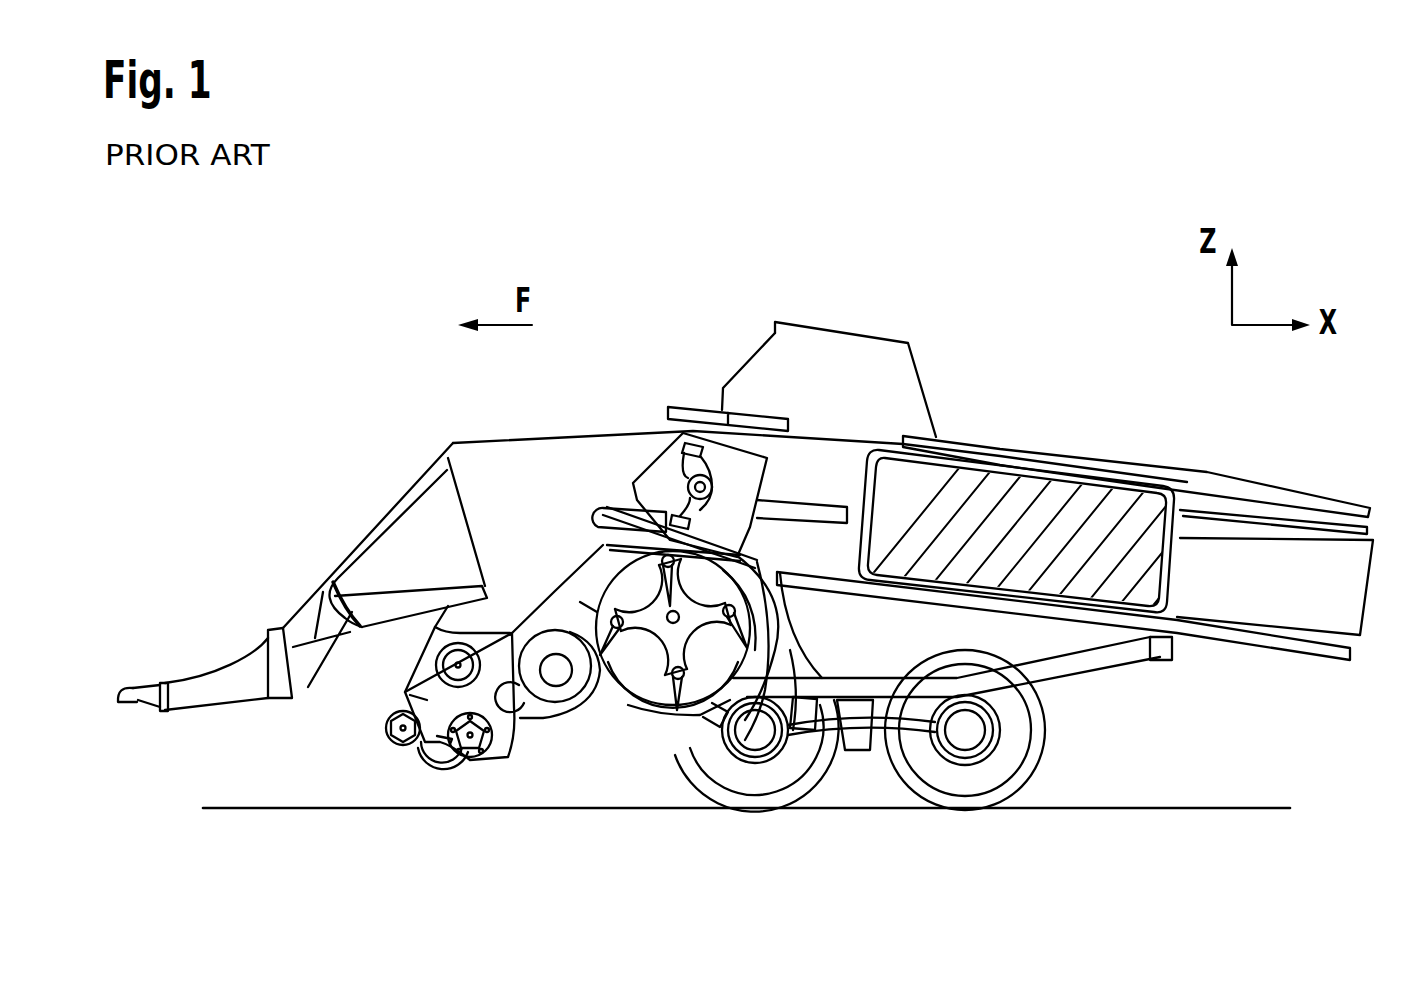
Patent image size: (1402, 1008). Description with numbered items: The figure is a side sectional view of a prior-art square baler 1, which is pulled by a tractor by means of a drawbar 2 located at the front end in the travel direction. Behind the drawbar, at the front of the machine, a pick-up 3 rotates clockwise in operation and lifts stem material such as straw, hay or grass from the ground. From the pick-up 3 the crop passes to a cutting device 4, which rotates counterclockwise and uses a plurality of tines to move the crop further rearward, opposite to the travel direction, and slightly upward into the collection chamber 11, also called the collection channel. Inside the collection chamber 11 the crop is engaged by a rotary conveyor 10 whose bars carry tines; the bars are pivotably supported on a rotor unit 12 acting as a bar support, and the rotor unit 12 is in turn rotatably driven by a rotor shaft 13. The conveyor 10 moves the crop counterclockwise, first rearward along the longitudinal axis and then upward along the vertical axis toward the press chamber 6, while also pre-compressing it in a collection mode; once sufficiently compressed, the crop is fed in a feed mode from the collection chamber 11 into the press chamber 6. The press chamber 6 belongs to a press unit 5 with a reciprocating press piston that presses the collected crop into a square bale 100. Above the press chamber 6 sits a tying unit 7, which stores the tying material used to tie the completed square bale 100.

The square baler 1 is at (1076, 378).
The drawbar 2 is at (123, 681).
The pick-up 3 is at (476, 774).
The cutting device 4 is at (565, 718).
The press unit 5 is at (665, 450).
The press chamber 6 is at (819, 562).
The tying unit 7 is at (893, 394).
The conveyor 10 is at (612, 583).
The collection chamber 11 is at (657, 701).
The rotor unit 12 is at (727, 647).
The rotor shaft 13 is at (673, 617).
The square bale 100 is at (1005, 552).